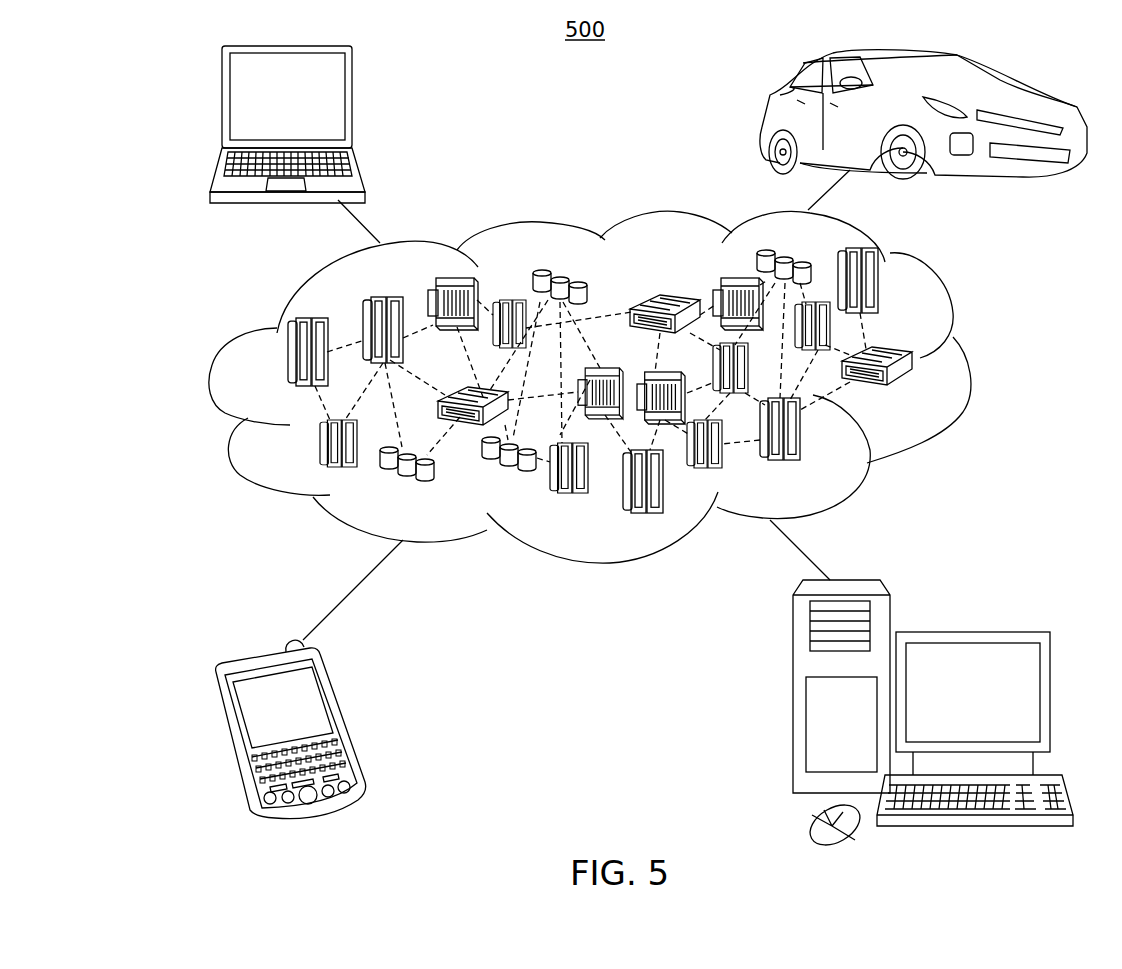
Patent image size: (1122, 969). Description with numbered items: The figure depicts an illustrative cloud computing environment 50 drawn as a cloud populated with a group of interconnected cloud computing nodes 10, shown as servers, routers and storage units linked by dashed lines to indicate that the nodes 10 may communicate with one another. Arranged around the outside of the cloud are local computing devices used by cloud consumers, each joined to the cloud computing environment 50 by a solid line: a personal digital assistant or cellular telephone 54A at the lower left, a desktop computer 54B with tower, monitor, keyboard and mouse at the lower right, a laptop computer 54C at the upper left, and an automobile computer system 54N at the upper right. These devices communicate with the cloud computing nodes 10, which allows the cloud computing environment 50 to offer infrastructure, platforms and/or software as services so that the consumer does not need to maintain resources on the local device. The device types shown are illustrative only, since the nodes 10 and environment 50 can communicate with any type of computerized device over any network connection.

The cloud computing environment 50 is at (968, 358).
The cloud computing node 10 is at (930, 398).
The personal digital assistant or cellular telephone 54A is at (343, 718).
The desktop computer 54B is at (970, 632).
The laptop computer 54C is at (352, 103).
The automobile computer system 54N is at (768, 117).